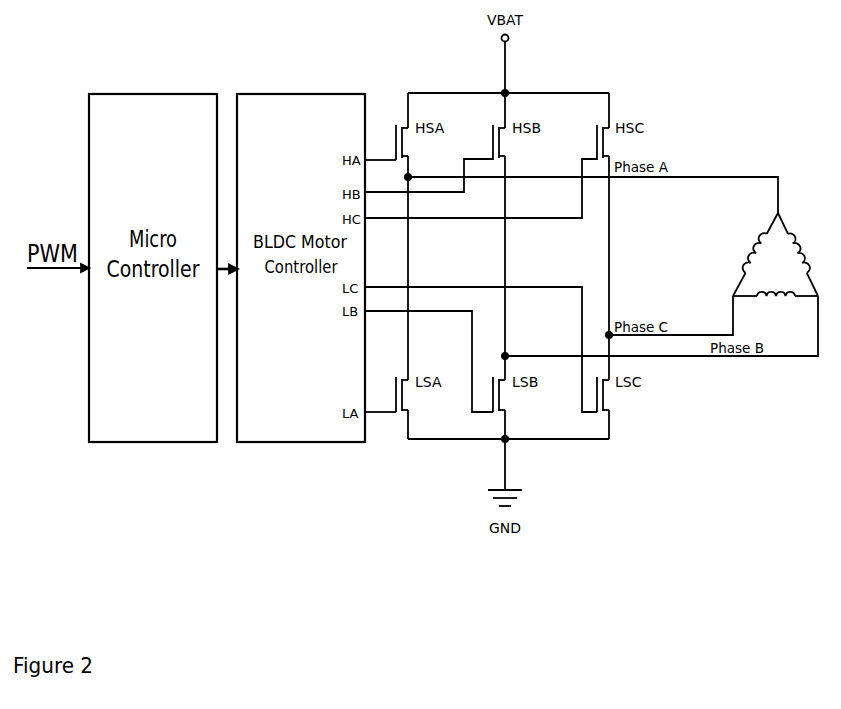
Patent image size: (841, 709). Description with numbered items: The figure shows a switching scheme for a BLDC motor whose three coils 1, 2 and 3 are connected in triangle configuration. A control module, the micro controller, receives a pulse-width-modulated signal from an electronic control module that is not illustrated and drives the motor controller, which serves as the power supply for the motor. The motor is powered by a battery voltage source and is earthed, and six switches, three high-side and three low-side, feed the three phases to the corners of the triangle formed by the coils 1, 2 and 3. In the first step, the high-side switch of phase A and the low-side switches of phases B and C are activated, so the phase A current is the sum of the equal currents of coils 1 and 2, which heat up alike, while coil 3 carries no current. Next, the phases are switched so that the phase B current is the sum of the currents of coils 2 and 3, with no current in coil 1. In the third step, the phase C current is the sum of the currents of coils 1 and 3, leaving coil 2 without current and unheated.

The coil 1 is at (755, 254).
The coil 2 is at (798, 254).
The coil 3 is at (775, 306).